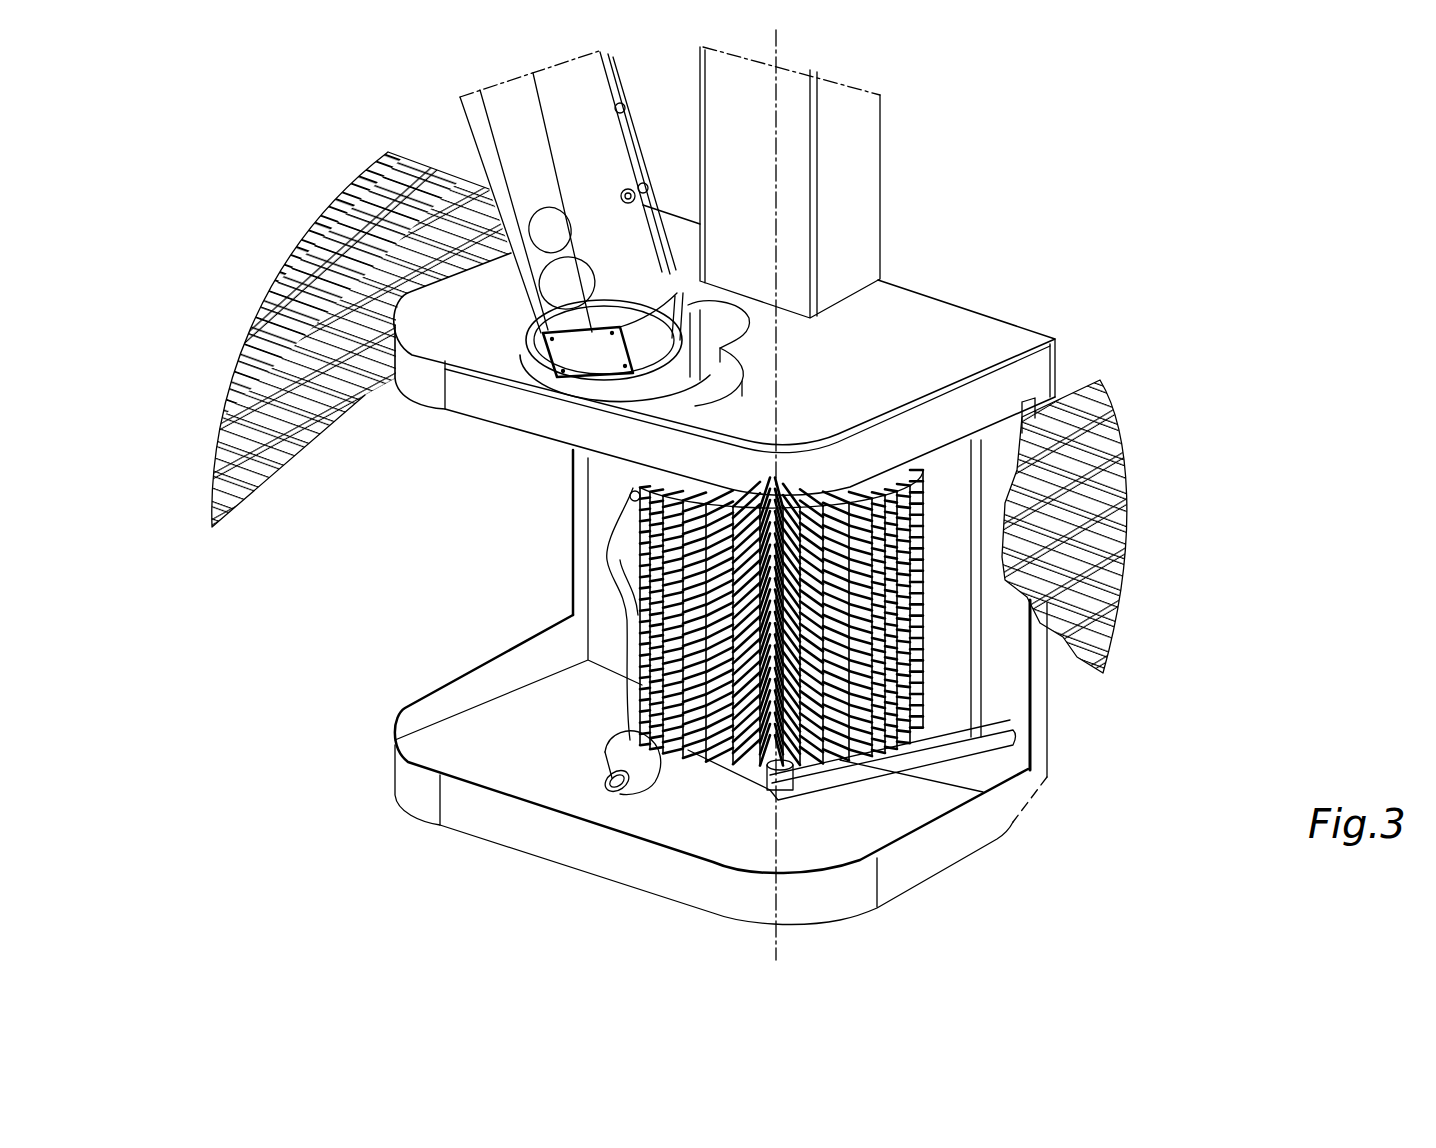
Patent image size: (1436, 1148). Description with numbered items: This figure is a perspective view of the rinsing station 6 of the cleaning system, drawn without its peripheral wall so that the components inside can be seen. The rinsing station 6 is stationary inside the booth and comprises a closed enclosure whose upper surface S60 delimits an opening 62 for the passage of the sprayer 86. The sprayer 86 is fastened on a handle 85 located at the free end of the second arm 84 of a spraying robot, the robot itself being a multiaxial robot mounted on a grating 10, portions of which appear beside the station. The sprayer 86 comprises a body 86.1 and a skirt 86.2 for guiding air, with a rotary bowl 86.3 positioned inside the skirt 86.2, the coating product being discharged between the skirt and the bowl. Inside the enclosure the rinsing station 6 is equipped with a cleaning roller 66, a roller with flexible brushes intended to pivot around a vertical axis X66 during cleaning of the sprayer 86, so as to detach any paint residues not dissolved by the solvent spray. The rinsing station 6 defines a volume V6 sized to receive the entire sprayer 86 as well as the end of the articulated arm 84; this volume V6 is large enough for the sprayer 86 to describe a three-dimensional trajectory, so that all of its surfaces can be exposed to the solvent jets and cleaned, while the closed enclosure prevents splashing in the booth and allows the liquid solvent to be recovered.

The rinsing station 6 is at (1094, 256).
The grating 10 is at (318, 245).
The opening 62 is at (720, 330).
The cleaning roller 66 is at (946, 630).
The second arm 84 is at (568, 213).
The handle 85 is at (680, 398).
The sprayer 86 is at (213, 718).
The body 86.1 is at (630, 625).
The skirt 86.2 is at (612, 752).
The rotary bowl 86.3 is at (607, 792).
The upper surface S60 is at (724, 350).
The volume V6 is at (555, 520).
The vertical axis X66 is at (775, 146).